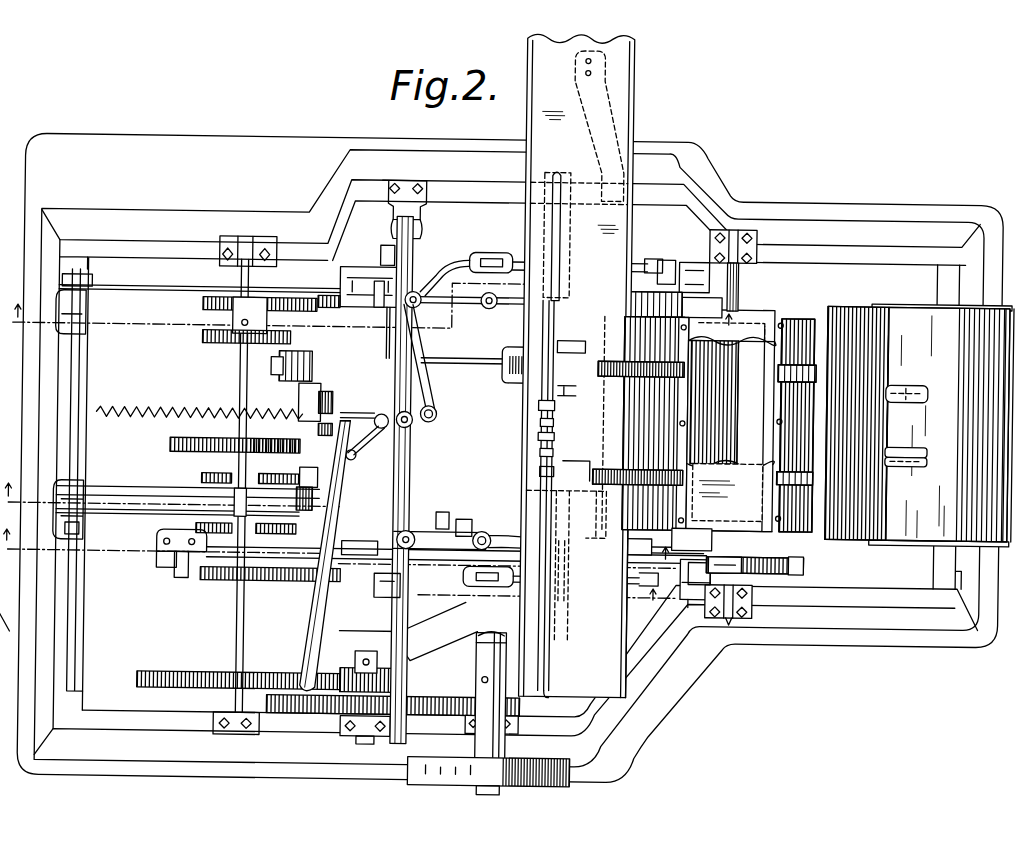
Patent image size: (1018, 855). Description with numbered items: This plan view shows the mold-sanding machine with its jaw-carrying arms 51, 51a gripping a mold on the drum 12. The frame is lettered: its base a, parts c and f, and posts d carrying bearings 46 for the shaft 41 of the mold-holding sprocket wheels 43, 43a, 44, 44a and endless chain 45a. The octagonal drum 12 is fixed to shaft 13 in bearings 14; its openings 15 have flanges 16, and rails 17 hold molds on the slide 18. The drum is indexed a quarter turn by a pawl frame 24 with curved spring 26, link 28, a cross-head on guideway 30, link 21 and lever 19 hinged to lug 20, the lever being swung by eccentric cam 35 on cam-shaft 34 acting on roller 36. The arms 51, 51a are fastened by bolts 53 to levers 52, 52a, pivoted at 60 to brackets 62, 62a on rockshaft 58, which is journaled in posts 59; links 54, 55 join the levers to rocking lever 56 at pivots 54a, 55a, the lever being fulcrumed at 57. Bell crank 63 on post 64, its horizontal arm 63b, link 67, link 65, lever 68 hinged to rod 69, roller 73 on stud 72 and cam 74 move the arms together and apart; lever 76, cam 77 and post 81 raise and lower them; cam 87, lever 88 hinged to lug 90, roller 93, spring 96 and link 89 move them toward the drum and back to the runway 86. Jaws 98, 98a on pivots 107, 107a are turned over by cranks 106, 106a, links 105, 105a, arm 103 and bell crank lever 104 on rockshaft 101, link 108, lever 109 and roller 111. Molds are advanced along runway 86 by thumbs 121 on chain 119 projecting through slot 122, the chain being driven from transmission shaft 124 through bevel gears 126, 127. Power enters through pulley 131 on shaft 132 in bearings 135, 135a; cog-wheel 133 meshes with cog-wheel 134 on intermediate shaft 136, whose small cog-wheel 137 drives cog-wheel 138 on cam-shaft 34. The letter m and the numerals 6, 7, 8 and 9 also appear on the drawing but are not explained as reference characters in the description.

The base of the frame a is at (510, 460).
The frame part c is at (69, 414).
The posts of the frame d is at (574, 345).
The frame part f is at (506, 374).
The drum member m is at (705, 463).
The section line 6- 6 is at (341, 555).
The section line 7- 7 is at (342, 535).
The section line 8-8 / bracket 8 is at (391, 315).
The bracket / lever 9 is at (411, 421).
The drum 12 is at (545, 380).
The drum shaft 13 is at (737, 282).
The bearings 14 is at (754, 249).
The openings 15 is at (731, 428).
The flanges 16 is at (772, 392).
The rails 17 is at (704, 424).
The slide 18 is at (919, 425).
The lever 19 is at (160, 562).
The lug 20 is at (165, 573).
The link 21 is at (285, 560).
The pawl frame 24 is at (757, 556).
The curved spring 26 is at (750, 557).
The link 28 is at (637, 610).
The guideway 30 is at (515, 538).
The cam-shaft 34 is at (239, 380).
The eccentric cam 35 is at (264, 584).
The roller 36 is at (184, 583).
The shaft 41 is at (532, 437).
The sprocket wheel 43 is at (533, 410).
The sprocket wheel 43a is at (900, 380).
The sprocket wheel 44 is at (530, 452).
The sprocket wheel 44a is at (902, 442).
The endless chain 45a is at (900, 461).
The bearings 46 is at (568, 244).
The jaw-carrying arm 51 is at (655, 305).
The jaw-carrying arm 51a is at (639, 542).
The lever 52 is at (508, 306).
The lever 52a is at (486, 532).
The bolts 53 is at (596, 582).
The link 54 is at (428, 392).
The pivot 54a is at (436, 415).
The link 55 is at (366, 447).
The pivot 55a is at (359, 445).
The rocking lever 56 is at (378, 417).
The fulcrum 57 is at (412, 425).
The rockshaft 58 is at (410, 460).
The posts 59 is at (378, 256).
The pivot 60 is at (485, 310).
The bracket 62 is at (446, 270).
The bracket 62a is at (436, 532).
The bell crank 63 is at (310, 644).
The horizontal arm of bell crank 63b is at (302, 465).
The post 64 is at (380, 662).
The link 65 is at (336, 487).
The link 67 is at (297, 499).
The lever 68 is at (130, 492).
The rod 69 is at (82, 374).
The stud 72 is at (235, 509).
The roller 73 is at (265, 478).
The cam 74 is at (218, 478).
The lever 76 is at (122, 520).
The cam 77 is at (215, 537).
The post 81 is at (448, 516).
The runway 86 is at (577, 365).
The cam 87 is at (197, 447).
The lever 88 is at (275, 431).
The link 89 is at (330, 397).
The lug 90 is at (299, 402).
The roller 93 is at (332, 435).
The spring 96 is at (156, 414).
The jaw 98 is at (702, 307).
The jaw 98a is at (700, 526).
The rockshaft 101 is at (385, 336).
The arm 103 is at (360, 538).
The bell crank lever 104 is at (377, 310).
The link 105 is at (650, 258).
The link 105a is at (570, 592).
The crank 106 is at (677, 426).
The crank 106a is at (712, 600).
The pivot 107 is at (698, 268).
The pivot 107a is at (712, 585).
The link 108 is at (345, 309).
The lever 109 is at (152, 293).
The roller 111 is at (231, 312).
The chain 119 is at (530, 422).
The thumbs 121 is at (566, 688).
The slot 122 is at (553, 660).
The transmission shaft 124 is at (456, 360).
The bevel gear 126 is at (282, 375).
The bevel gear 127 is at (224, 347).
The pulley 131 is at (555, 786).
The shaft 132 is at (492, 795).
The cog-wheel 133 is at (523, 707).
The cog-wheel 134 is at (430, 698).
The bearing 135 is at (488, 636).
The bearing 135a is at (518, 734).
The intermediate shaft 136 is at (365, 739).
The small cog-wheel 137 is at (396, 680).
The cog-wheel 138 is at (185, 692).